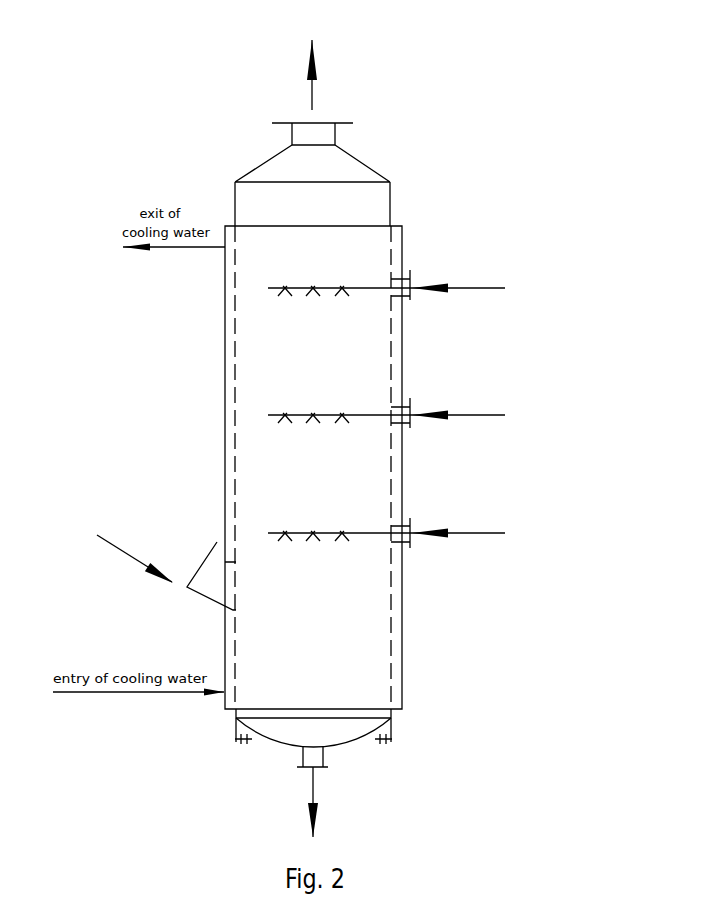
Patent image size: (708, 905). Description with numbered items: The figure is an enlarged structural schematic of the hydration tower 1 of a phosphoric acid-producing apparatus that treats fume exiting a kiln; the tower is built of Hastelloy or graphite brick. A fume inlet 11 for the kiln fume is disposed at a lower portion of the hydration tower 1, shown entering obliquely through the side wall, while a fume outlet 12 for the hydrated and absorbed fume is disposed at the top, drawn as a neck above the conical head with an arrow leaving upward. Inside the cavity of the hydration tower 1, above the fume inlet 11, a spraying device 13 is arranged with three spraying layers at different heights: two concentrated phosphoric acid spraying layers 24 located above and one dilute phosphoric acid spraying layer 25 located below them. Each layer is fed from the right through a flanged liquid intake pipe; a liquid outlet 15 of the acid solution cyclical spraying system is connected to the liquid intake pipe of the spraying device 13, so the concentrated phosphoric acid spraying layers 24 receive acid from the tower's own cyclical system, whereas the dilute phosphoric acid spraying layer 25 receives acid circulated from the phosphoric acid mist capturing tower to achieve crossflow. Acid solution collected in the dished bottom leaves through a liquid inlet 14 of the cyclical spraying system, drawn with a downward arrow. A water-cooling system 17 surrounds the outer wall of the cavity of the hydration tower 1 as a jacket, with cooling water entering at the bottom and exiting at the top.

The hydration tower 1 is at (250, 490).
The fume inlet 11 is at (225, 562).
The fume outlet 12 is at (305, 137).
The spraying device 13 is at (342, 288).
The liquid inlet 14 is at (303, 755).
The liquid outlet 15 is at (500, 228).
The water-cooling system 17 is at (232, 388).
The concentrated phosphoric acid spraying layer 24 is at (342, 415).
The dilute phosphoric acid spraying layer 25 is at (368, 532).